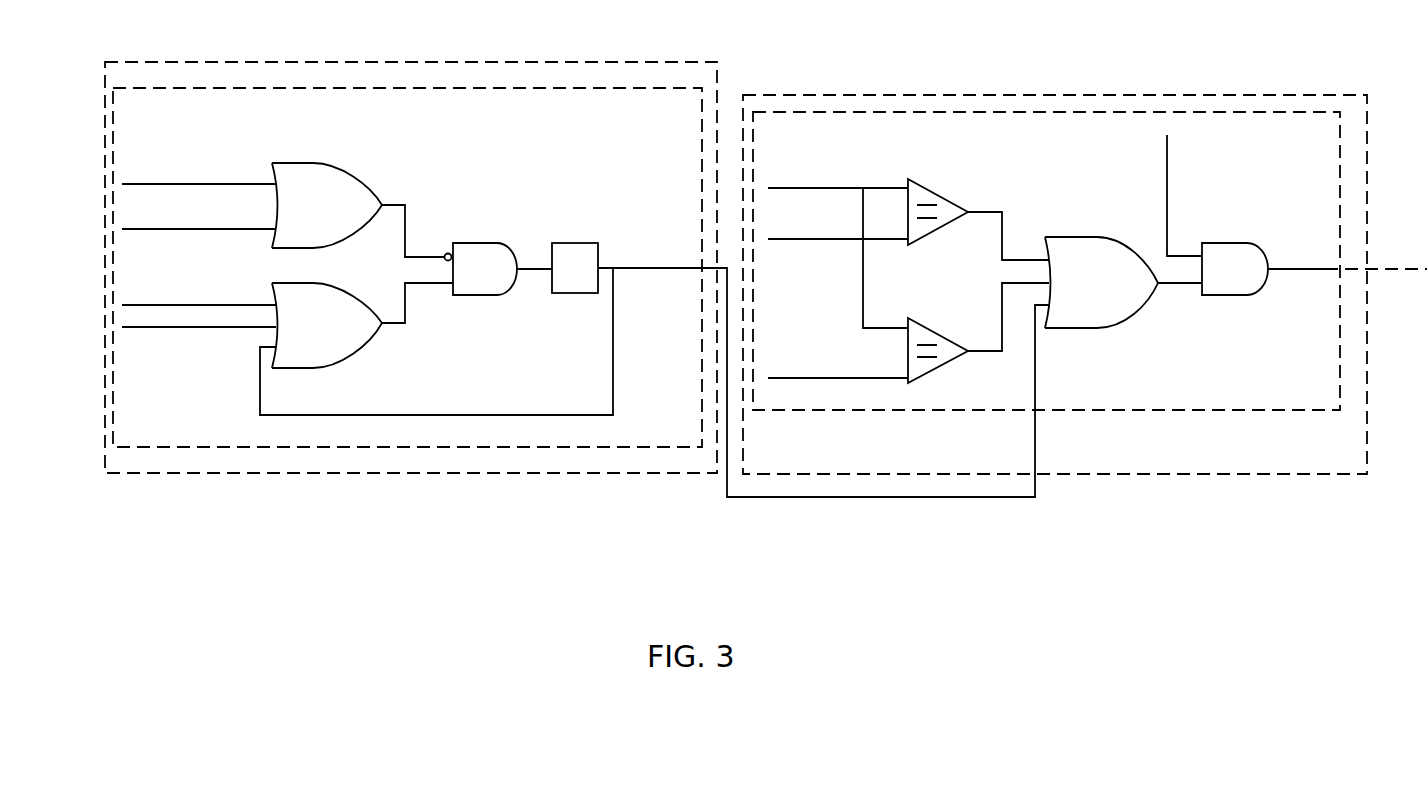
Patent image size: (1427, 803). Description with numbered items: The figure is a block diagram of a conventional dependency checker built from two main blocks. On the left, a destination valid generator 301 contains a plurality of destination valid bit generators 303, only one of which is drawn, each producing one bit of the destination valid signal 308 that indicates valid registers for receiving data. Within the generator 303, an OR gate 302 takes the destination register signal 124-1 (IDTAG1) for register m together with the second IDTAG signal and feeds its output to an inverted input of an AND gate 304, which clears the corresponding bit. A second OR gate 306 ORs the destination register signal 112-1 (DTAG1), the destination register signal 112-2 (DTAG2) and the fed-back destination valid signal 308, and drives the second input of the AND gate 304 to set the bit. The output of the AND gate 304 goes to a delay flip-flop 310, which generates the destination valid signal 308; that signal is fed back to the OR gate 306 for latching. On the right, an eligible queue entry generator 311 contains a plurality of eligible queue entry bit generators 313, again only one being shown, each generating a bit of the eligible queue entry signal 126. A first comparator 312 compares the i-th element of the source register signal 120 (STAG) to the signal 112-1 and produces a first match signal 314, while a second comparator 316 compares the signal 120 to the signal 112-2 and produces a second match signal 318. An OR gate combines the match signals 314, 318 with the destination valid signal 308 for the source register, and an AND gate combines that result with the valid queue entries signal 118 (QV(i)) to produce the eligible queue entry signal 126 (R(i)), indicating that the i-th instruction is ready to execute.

The destination valid generator 301 is at (425, 62).
The destination valid bit generator 303 is at (425, 90).
The destination register signal (IDTAG1) 124-1 is at (133, 184).
The destination register signal (DTAG1) 112-1 is at (133, 305).
The destination register signal (DTAG2) 112-2 is at (133, 327).
The OR gate 302 is at (362, 180).
The OR gate 306 is at (360, 352).
The AND gate 304 is at (478, 240).
The delay flip-flop 310 is at (578, 240).
The destination valid signal 308 is at (643, 270).
The eligible queue entry generator 311 is at (1200, 474).
The eligible queue entry bit generator 313 is at (1197, 410).
The source register signal (STAG) 120 is at (852, 189).
The first comparator 312 is at (933, 190).
The first match signal 314 is at (985, 212).
The second comparator 316 is at (932, 328).
The second match signal 318 is at (987, 352).
The valid queue entries signal 118 is at (1166, 150).
The eligible queue entry signal 126 is at (1315, 270).